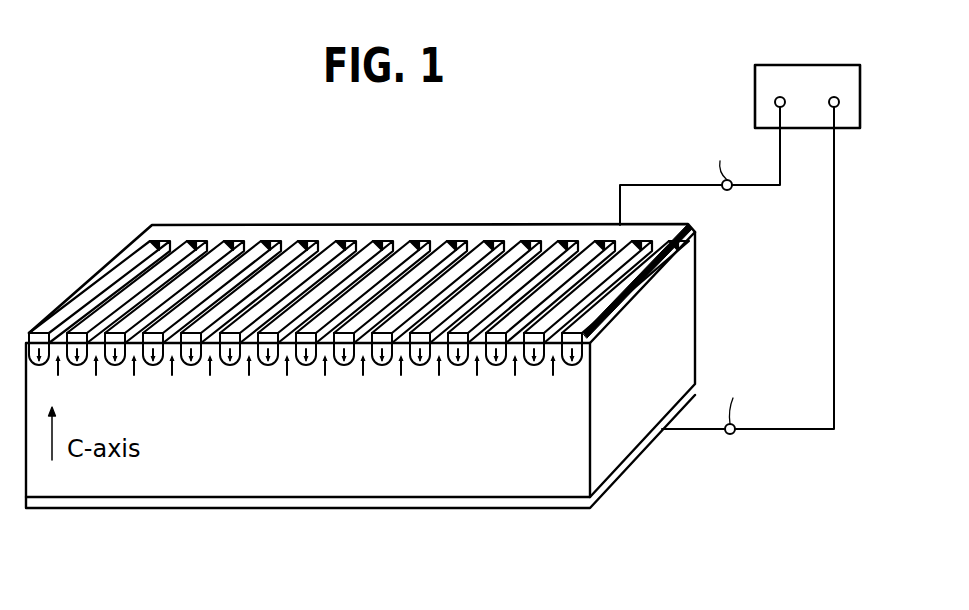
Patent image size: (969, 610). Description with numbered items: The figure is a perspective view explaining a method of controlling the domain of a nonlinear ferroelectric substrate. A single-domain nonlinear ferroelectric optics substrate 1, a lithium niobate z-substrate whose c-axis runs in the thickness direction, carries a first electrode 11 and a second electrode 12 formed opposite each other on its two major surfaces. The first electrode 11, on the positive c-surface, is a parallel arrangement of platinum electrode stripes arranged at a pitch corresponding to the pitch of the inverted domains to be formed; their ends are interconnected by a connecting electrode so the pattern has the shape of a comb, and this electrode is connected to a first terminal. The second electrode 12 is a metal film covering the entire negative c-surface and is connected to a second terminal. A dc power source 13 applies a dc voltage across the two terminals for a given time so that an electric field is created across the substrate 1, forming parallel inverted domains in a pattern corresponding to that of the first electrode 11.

The single-domain nonlinear ferroelectric optics substrate 1 is at (528, 483).
The first electrode 11 is at (115, 300).
The second electrode 12 is at (197, 509).
The dc power source 13 is at (783, 65).